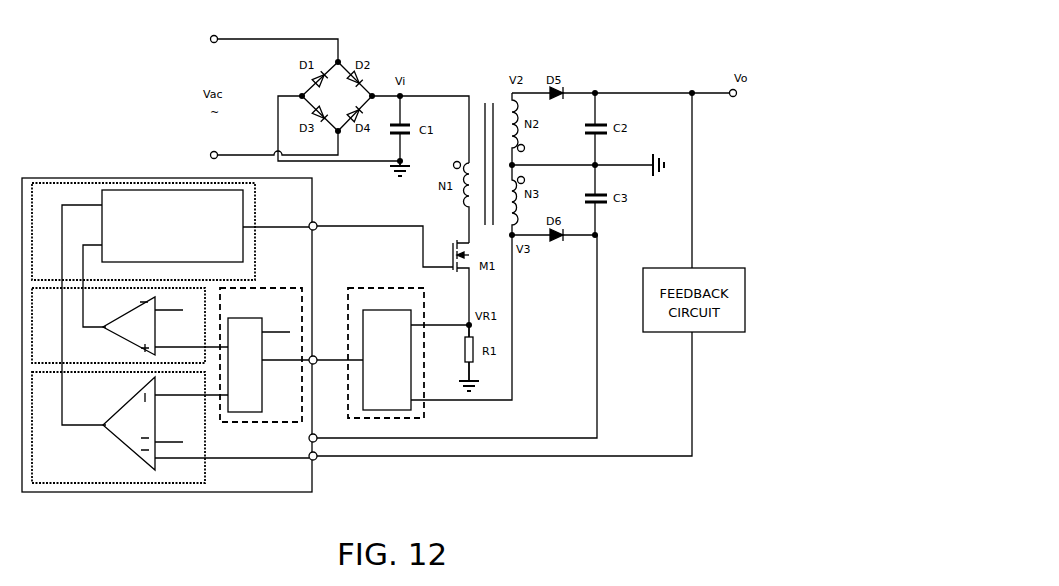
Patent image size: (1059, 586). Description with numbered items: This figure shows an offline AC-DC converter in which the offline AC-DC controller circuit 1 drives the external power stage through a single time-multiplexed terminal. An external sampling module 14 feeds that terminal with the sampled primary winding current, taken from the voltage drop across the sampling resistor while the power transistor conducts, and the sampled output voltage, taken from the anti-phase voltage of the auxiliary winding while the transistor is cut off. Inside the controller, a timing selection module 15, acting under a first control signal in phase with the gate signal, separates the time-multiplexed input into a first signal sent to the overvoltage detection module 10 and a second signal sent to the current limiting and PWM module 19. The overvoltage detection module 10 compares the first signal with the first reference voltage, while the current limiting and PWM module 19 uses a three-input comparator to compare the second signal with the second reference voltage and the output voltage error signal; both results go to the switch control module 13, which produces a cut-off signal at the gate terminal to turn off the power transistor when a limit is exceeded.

The offline AC-DC controller circuit 1 is at (185, 335).
The overvoltage detection module 10 is at (130, 325).
The switch control module 13 is at (170, 304).
The external sampling module 14 is at (370, 353).
The timing selection module 15 is at (264, 355).
The current limiting and PWM module 19 is at (170, 427).